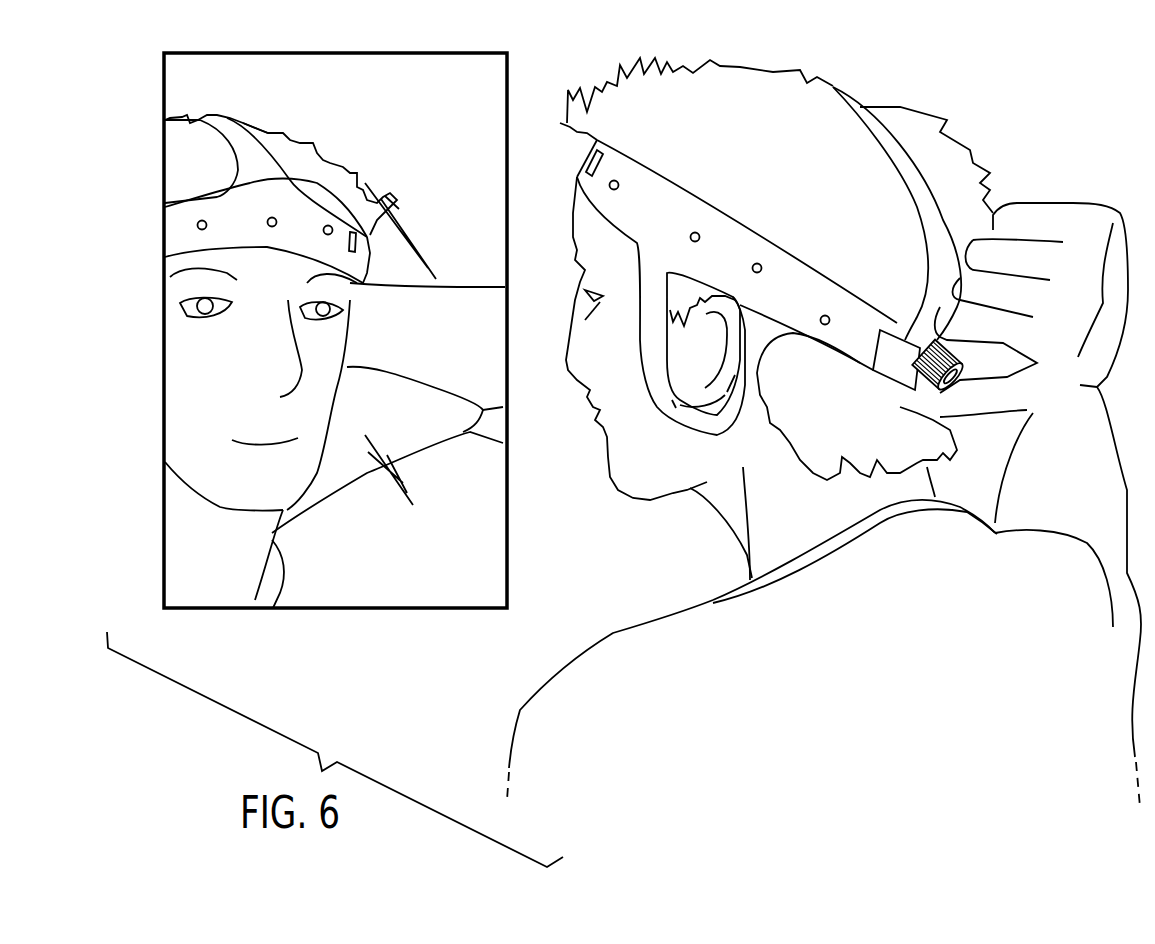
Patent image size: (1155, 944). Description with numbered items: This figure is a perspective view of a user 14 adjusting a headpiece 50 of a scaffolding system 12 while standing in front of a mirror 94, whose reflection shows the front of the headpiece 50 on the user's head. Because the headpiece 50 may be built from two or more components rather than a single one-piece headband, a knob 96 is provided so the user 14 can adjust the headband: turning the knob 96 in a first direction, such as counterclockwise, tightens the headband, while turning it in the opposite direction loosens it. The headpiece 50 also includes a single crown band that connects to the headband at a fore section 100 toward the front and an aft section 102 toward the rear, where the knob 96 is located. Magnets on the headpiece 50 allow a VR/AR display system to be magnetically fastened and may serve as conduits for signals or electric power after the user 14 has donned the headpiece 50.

The scaffolding system 12 is at (1002, 119).
The user 14 is at (936, 761).
The headpiece 50 is at (545, 155).
The mirror 94 is at (330, 52).
The knob 96 is at (955, 376).
The fore section 100 is at (273, 177).
The aft section 102 is at (897, 372).